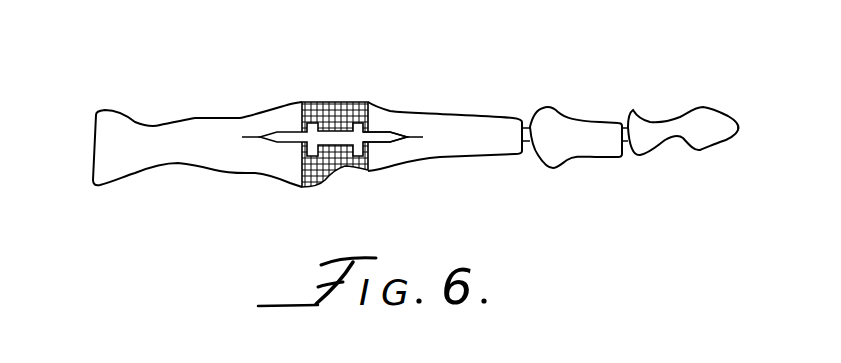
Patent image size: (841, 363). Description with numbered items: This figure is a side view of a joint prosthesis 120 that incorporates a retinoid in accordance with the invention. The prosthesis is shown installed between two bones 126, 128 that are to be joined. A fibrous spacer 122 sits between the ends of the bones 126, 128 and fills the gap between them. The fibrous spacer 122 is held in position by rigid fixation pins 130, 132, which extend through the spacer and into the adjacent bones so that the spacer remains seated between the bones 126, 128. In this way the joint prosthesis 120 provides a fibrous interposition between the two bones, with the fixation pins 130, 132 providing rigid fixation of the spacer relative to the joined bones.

The joint prosthesis 120 is at (426, 90).
The fibrous spacer 122 is at (344, 104).
The bone 126 is at (199, 128).
The bone 128 is at (490, 118).
The rigid fixation pin 130 is at (283, 146).
The rigid fixation pin 132 is at (393, 145).